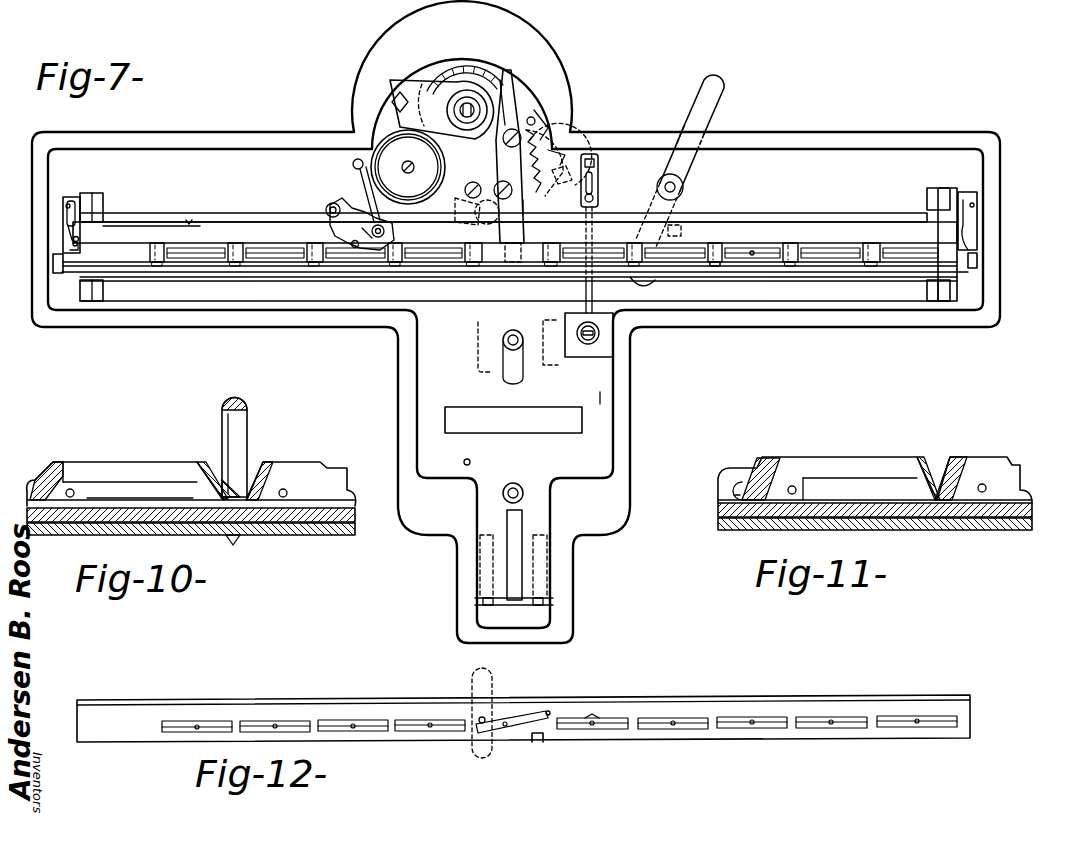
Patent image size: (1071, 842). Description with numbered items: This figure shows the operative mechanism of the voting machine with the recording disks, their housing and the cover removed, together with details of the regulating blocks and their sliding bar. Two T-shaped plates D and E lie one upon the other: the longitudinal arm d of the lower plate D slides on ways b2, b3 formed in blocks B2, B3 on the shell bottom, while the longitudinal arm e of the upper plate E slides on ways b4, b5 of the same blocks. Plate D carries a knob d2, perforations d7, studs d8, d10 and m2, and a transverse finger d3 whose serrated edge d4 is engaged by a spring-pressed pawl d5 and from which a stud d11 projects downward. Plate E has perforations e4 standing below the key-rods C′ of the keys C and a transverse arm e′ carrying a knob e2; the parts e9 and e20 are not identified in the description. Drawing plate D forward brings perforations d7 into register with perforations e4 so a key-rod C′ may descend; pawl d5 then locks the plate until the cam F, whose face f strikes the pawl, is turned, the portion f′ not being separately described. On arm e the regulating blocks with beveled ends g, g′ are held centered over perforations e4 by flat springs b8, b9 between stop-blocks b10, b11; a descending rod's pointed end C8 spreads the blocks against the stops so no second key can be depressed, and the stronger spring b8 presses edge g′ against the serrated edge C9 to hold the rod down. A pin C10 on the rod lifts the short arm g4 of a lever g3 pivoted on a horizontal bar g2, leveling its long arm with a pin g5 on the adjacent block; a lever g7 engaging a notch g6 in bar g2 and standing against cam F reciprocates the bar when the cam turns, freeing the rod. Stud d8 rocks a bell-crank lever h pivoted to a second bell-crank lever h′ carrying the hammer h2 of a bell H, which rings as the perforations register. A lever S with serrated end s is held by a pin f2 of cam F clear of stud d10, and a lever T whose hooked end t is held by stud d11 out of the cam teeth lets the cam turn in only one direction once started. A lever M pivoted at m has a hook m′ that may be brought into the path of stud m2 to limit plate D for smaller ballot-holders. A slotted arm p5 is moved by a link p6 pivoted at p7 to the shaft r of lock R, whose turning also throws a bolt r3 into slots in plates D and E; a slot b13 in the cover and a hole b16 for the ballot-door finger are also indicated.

In FIG. 7, the block B2 is at (48, 218).
In FIG. 7, the way b2 is at (100, 206).
In FIG. 7, the way b4 is at (92, 200).
In FIG. 7, the flat spring b8 is at (70, 238).
In FIG. 7, the stop-block b10 is at (53, 264).
In FIG. 7, the hole b16 is at (78, 240).
In FIG. 7, the way b3 is at (930, 196).
In FIG. 7, the way b5 is at (946, 190).
In FIG. 7, the block B3 is at (986, 212).
In FIG. 7, the flat spring b9 is at (978, 240).
In FIG. 7, the stop-block b11 is at (980, 262).
In FIG. 7, the longitudinal slot b13 is at (580, 422).
In FIG. 7, the longitudinal arm d is at (266, 213).
In FIG. 7, the knob d2 is at (500, 337).
In FIG. 7, the transverse finger d3 is at (577, 142).
In FIG. 7, the serrated edge d4 is at (546, 128).
In FIG. 7, the pawl d5 is at (533, 118).
In FIG. 7, the perforations d7 is at (160, 227).
In FIG. 7, the stud d8 is at (331, 205).
In FIG. 7, the stud d10 is at (468, 193).
In FIG. 7, the stud d11 is at (565, 178).
In FIG. 7, the key C is at (207, 250).
In FIG. 10, the key C is at (118, 466).
In FIG. 11, the key C is at (836, 464).
In FIG. 7, the plate D is at (785, 212).
In FIG. 10, the plate D is at (326, 536).
In FIG. 11, the plate D is at (716, 525).
In FIG. 7, the plate E is at (818, 216).
In FIG. 10, the plate E is at (356, 514).
In FIG. 11, the plate E is at (716, 510).
In FIG. 7, the longitudinal arm e is at (189, 223).
In FIG. 7, the knob e2 is at (500, 495).
In FIG. 7, the perforations e4 is at (168, 260).
In FIG. 11, the perforations e4 is at (738, 497).
In FIG. 7, the lug e9 is at (562, 150).
In FIG. 7, the hole e20 is at (472, 462).
In FIG. 7, the transverse arm e′ is at (602, 398).
In FIG. 7, the cam F is at (445, 72).
In FIG. 7, the face f is at (476, 64).
In FIG. 7, the spring f′ is at (458, 72).
In FIG. 7, the pin f2 is at (411, 158).
In FIG. 10, the beveled end g is at (50, 466).
In FIG. 11, the beveled end g is at (757, 460).
In FIG. 10, the beveled end g′ is at (205, 462).
In FIG. 11, the beveled end g′ is at (925, 462).
In FIG. 12, the horizontal bar g2 is at (648, 706).
In FIG. 7, the lever g3 is at (750, 264).
In FIG. 12, the lever g3 is at (618, 734).
In FIG. 7, the short arm g4 is at (714, 264).
In FIG. 12, the short arm g4 is at (571, 716).
In FIG. 7, the pin g5 is at (742, 266).
In FIG. 10, the pin g5 is at (75, 490).
In FIG. 11, the pin g5 is at (795, 488).
In FIG. 12, the pin g5 is at (550, 710).
In FIG. 12, the notch g6 is at (538, 743).
In FIG. 7, the lever g7 is at (508, 206).
In FIG. 7, the bell H is at (382, 154).
In FIG. 7, the bell-crank lever h is at (362, 219).
In FIG. 7, the bell-crank lever h′ is at (382, 212).
In FIG. 7, the hammer h2 is at (352, 164).
In FIG. 7, the lever M is at (712, 103).
In FIG. 7, the pivot m is at (677, 186).
In FIG. 7, the stud m2 is at (684, 230).
In FIG. 7, the hook m′ is at (651, 285).
In FIG. 7, the slotted arm p5 is at (600, 165).
In FIG. 7, the link p6 is at (594, 291).
In FIG. 7, the pivot p7 is at (600, 320).
In FIG. 7, the lock R is at (618, 356).
In FIG. 7, the rotating shaft r is at (608, 338).
In FIG. 7, the bolt r3 is at (552, 320).
In FIG. 7, the lever S is at (507, 163).
In FIG. 7, the serrated end s is at (477, 220).
In FIG. 7, the lever T is at (526, 118).
In FIG. 7, the hooked end t is at (507, 98).
In FIG. 10, the key-rod C′ is at (250, 412).
In FIG. 12, the key-rod C′ is at (496, 684).
In FIG. 10, the pointed lower end C8 is at (242, 540).
In FIG. 10, the serrated edge C9 is at (228, 478).
In FIG. 10, the pin C10 is at (250, 490).
In FIG. 12, the pin C10 is at (480, 716).